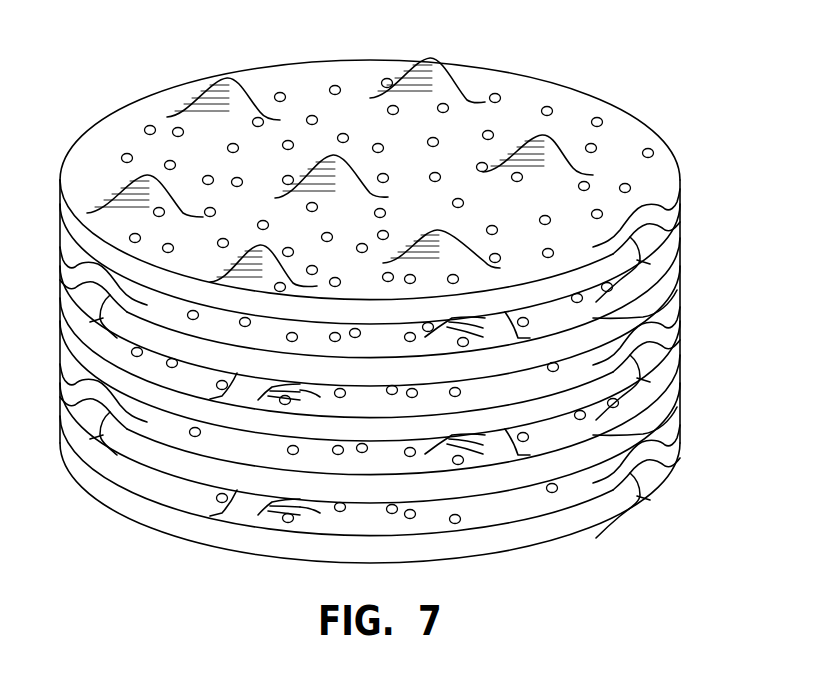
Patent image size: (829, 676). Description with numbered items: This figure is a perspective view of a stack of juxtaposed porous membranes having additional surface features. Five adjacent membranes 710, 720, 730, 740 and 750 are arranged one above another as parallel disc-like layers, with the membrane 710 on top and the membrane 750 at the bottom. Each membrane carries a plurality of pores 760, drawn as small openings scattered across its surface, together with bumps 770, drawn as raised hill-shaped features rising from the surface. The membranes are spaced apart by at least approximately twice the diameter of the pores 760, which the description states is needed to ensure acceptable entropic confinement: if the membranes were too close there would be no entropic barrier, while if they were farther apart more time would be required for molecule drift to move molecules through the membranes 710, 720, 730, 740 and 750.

The membrane 710 is at (343, 59).
The membrane 720 is at (676, 270).
The membrane 730 is at (676, 325).
The membrane 740 is at (676, 385).
The membrane 750 is at (676, 445).
The pores 760 is at (600, 118).
The bumps 770 is at (548, 138).